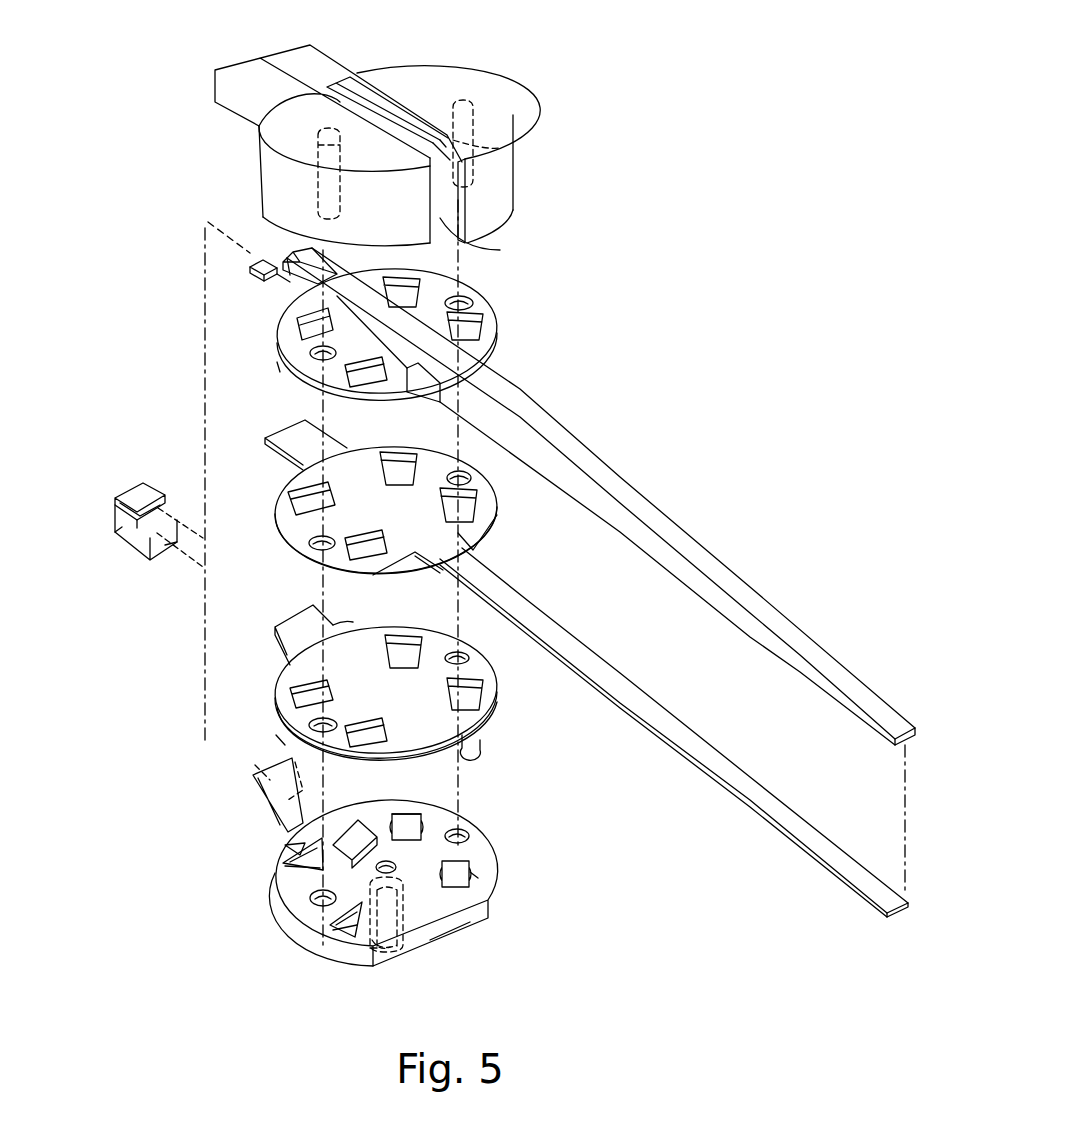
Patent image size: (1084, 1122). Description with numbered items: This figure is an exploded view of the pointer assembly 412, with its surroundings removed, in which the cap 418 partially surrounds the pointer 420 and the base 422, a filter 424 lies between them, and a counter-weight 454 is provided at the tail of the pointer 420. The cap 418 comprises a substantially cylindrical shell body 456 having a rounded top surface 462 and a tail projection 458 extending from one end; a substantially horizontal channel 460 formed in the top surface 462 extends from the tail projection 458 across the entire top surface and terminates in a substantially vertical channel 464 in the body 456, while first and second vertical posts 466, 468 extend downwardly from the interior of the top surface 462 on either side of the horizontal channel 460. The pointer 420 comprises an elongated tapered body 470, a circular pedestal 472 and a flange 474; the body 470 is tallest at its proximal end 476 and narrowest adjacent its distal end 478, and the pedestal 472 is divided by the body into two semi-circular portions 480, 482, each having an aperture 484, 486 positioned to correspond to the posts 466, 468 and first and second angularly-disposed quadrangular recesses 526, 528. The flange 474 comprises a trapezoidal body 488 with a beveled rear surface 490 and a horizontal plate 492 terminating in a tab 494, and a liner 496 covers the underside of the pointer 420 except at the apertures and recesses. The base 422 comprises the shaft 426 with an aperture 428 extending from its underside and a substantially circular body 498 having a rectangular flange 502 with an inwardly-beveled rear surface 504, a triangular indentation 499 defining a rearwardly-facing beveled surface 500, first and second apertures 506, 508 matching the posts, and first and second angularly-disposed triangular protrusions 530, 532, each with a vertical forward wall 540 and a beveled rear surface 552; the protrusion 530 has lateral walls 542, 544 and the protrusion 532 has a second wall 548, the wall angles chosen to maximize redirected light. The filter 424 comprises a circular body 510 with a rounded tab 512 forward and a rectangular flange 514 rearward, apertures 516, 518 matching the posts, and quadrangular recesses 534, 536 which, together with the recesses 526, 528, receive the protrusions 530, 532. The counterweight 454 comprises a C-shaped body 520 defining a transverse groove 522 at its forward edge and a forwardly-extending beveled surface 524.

The pointer assembly 412 is at (707, 361).
The cap 418 is at (498, 85).
The pointer 420 is at (567, 433).
The base 422 is at (497, 857).
The filter 424 is at (498, 691).
The shaft 426 is at (390, 947).
The aperture 428 is at (405, 866).
The counter-weight 454 is at (115, 498).
The shell body 456 is at (513, 180).
The tail projection 458 is at (317, 62).
The horizontal channel 460 is at (437, 153).
The top surface 462 is at (425, 83).
The vertical channel 464 is at (495, 250).
The first vertical post 466 is at (318, 183).
The second vertical post 468 is at (500, 148).
The tapered body 470 is at (665, 530).
The pedestal 472 is at (280, 369).
The flange 474 is at (278, 286).
The proximal end 476 is at (287, 256).
The distal end 478 is at (897, 725).
The semi-circular portion 480 is at (430, 404).
The semi-circular portion 482 is at (492, 333).
The aperture 484 is at (314, 358).
The aperture 486 is at (470, 303).
The trapezoidal body 488 is at (277, 289).
The beveled rear surface 490 is at (290, 256).
The horizontal plate 492 is at (275, 283).
The tab 494 is at (256, 262).
The liner 496 is at (660, 708).
The circular body 498 is at (285, 880).
The triangular indentation 499 is at (360, 873).
The beveled surface 500 is at (343, 840).
The rectangular flange 502 is at (278, 822).
The beveled rear surface 504 is at (259, 733).
The first aperture 506 is at (315, 906).
The second aperture 508 is at (470, 835).
The circular body 510 is at (353, 617).
The rounded tab 512 is at (480, 757).
The rectangular flange 514 is at (310, 618).
The first aperture 516 is at (350, 716).
The second aperture 518 is at (469, 657).
The C-shaped body 520 is at (115, 510).
The transverse groove 522 is at (155, 510).
The beveled surface 524 is at (173, 548).
The quadrangular recess 526 is at (488, 318).
The quadrangular recess 528 is at (385, 280).
The triangular protrusion 530 is at (473, 882).
The triangular protrusion 532 is at (425, 822).
The quadrangular recess 534 is at (385, 732).
The quadrangular recess 536 is at (393, 647).
The vertical forward wall 540 is at (370, 948).
The first wall 542 is at (475, 870).
The second wall 544 is at (470, 922).
The second wall 548 is at (427, 821).
The beveled rear surface 552 is at (283, 868).